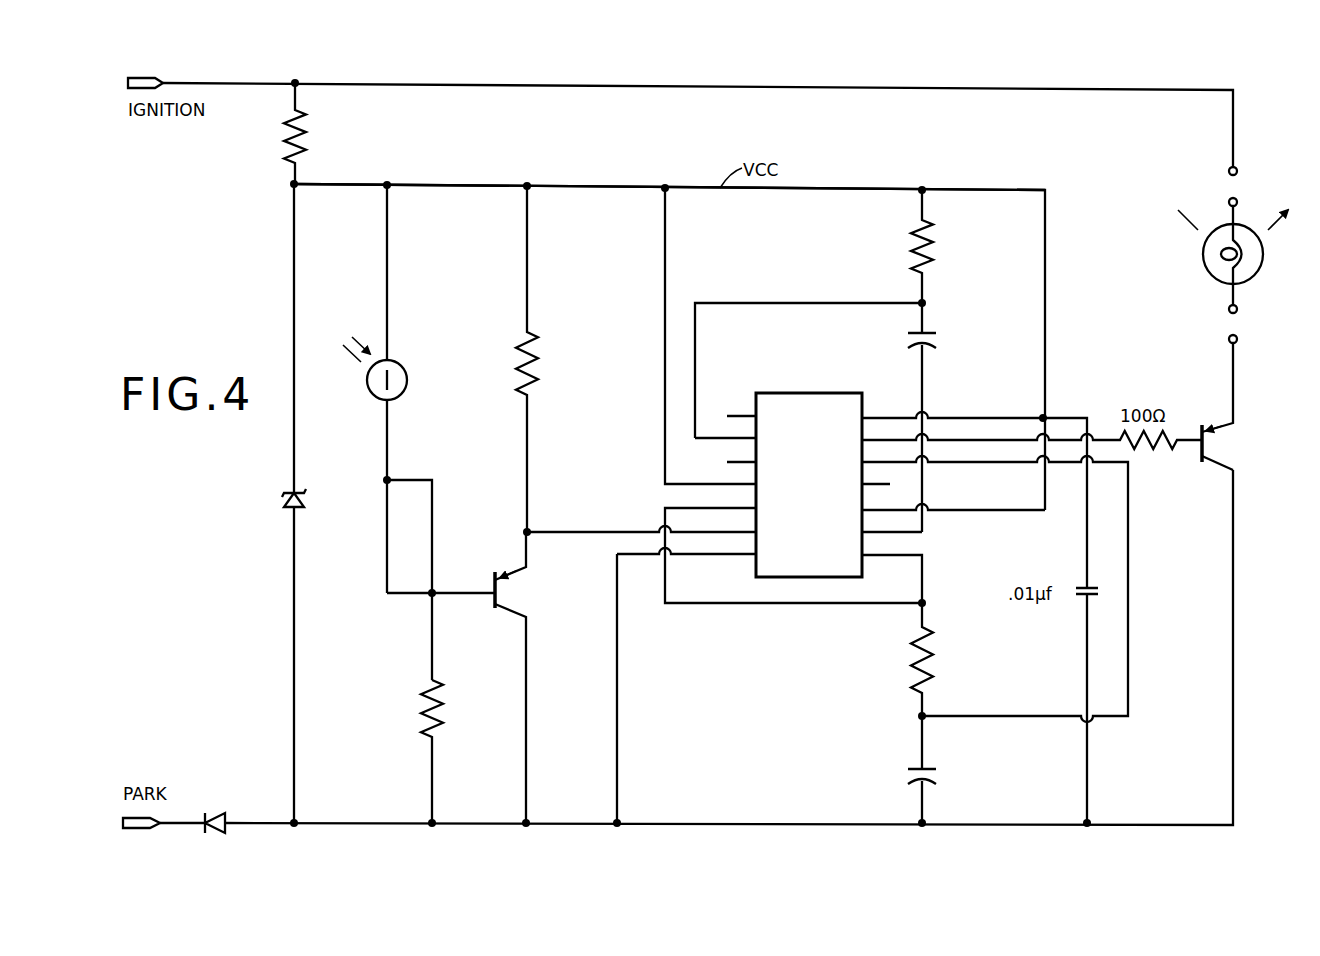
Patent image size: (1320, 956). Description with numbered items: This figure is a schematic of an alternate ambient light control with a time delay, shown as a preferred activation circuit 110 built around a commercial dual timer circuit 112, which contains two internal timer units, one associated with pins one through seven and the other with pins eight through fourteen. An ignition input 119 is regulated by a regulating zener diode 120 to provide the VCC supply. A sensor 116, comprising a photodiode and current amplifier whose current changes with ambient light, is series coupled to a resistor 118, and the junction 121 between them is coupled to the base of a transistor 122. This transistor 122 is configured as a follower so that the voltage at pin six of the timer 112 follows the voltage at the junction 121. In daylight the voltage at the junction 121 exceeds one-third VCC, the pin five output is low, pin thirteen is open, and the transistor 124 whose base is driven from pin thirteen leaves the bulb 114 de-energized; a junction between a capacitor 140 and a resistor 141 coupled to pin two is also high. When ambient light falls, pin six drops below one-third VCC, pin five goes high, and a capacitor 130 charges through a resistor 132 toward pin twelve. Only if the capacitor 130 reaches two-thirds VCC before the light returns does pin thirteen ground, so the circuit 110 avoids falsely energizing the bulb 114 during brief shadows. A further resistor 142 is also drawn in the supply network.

The activation circuit 110 is at (850, 179).
The 556 timer circuit 112 is at (793, 410).
The bulb 114 is at (1254, 284).
The sensor 116 is at (393, 362).
The resistor 118 is at (432, 683).
The ignition input 119 is at (292, 86).
The regulating zener diode 120 is at (290, 500).
The junction 121 is at (433, 592).
The transistor 122 is at (513, 606).
The transistor 124 is at (1220, 430).
The capacitor 130 is at (918, 768).
The resistor 132 is at (914, 657).
The capacitor 140 is at (926, 330).
The resistor 141 is at (930, 232).
The 470K resistor 142 is at (520, 378).